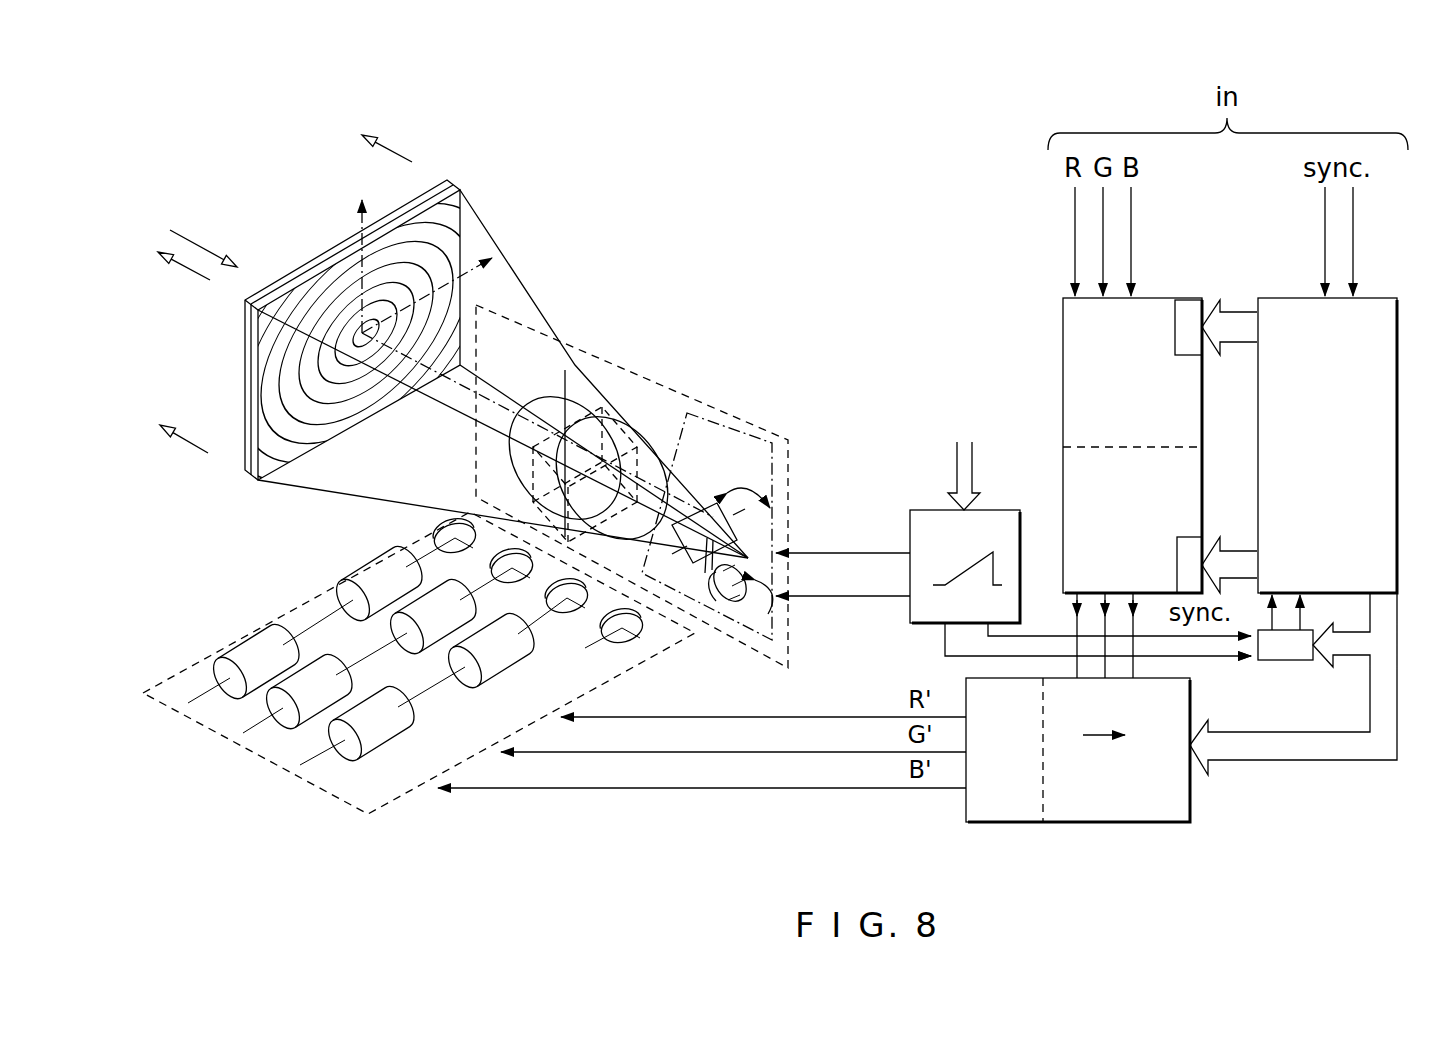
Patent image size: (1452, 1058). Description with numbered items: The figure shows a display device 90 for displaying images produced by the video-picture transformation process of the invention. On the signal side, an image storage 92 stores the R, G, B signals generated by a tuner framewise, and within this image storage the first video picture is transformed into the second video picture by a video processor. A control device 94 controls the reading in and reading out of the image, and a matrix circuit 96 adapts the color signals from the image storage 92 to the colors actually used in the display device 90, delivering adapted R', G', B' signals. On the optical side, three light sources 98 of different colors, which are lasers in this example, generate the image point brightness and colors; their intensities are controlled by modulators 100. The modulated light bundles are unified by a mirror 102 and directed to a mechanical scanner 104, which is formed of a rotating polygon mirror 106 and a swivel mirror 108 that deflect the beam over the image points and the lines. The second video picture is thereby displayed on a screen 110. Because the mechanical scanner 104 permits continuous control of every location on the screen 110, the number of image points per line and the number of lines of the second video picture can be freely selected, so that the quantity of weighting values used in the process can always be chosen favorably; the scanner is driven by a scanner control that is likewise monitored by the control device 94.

The display device 90 is at (697, 295).
The image storage 92 is at (1148, 310).
The control device 94 is at (1377, 310).
The matrix circuit 96 is at (1193, 797).
The light sources 98 is at (228, 692).
The modulators 100 is at (373, 578).
The mirror 102 is at (582, 647).
The mechanical scanner 104 is at (772, 443).
The rotating polygon mirror 106 is at (723, 605).
The swivel mirror 108 is at (713, 500).
The screen 110 is at (453, 208).